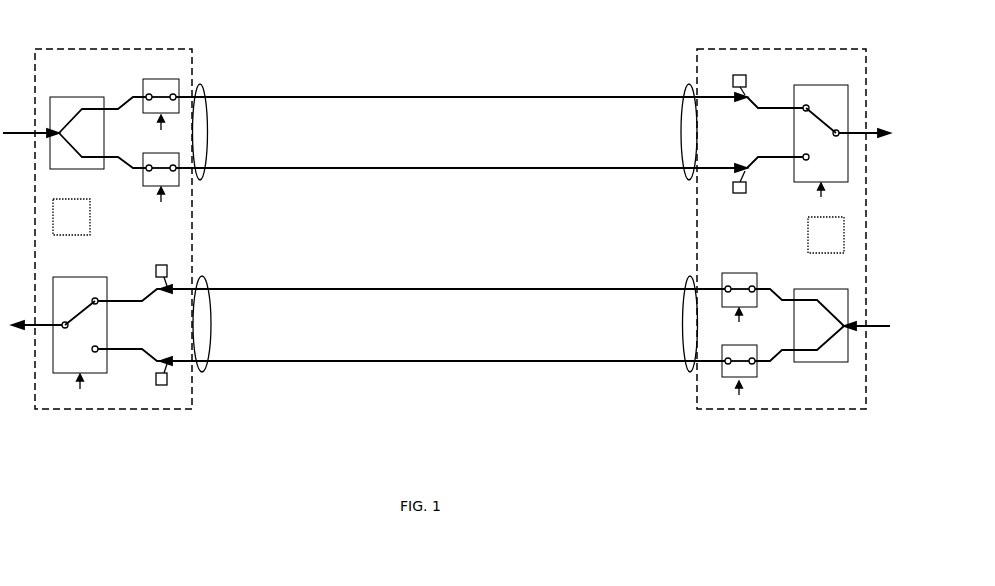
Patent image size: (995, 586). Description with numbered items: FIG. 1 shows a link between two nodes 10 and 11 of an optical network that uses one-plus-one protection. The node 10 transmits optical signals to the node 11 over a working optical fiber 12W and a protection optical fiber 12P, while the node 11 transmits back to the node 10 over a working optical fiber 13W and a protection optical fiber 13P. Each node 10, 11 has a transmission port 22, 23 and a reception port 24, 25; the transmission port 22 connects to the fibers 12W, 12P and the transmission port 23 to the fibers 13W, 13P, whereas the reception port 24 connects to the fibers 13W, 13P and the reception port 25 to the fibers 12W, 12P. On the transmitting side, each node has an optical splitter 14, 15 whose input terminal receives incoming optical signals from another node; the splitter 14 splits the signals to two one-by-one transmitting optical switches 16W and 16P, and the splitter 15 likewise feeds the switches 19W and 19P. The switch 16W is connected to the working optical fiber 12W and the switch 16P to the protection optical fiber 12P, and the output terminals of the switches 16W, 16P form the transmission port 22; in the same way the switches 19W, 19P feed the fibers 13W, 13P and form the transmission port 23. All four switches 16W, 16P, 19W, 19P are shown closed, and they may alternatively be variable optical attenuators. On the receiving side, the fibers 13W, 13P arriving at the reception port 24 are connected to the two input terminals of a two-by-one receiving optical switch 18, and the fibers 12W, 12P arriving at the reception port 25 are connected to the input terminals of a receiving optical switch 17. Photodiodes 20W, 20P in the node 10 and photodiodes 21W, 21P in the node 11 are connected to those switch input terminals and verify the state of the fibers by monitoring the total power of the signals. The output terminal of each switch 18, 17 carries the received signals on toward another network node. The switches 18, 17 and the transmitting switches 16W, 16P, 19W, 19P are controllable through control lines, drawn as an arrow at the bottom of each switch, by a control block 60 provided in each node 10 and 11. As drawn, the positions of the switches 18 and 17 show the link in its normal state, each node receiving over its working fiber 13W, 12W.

The node 10 is at (193, 50).
The node 11 is at (852, 49).
The optical splitter 14 is at (78, 97).
The optical splitter 15 is at (823, 289).
The transmitting optical switch 16W is at (160, 79).
The transmitting optical switch 16P is at (143, 183).
The receiving optical switch 17 is at (823, 85).
The receiving optical switch 18 is at (80, 277).
The transmitting optical switch 19W is at (745, 256).
The transmitting optical switch 19P is at (757, 374).
The photodiode 20W is at (157, 266).
The photodiode 20P is at (160, 385).
The photodiode 21W is at (746, 75).
The photodiode 21P is at (746, 193).
The working optical fiber 12W is at (446, 97).
The protection optical fiber 12P is at (441, 168).
The working optical fiber 13W is at (442, 289).
The protection optical fiber 13P is at (428, 361).
The transmission port 22 is at (205, 87).
The transmission port 23 is at (684, 281).
The reception port 24 is at (207, 281).
The reception port 25 is at (684, 88).
The control block 60 is at (90, 230).